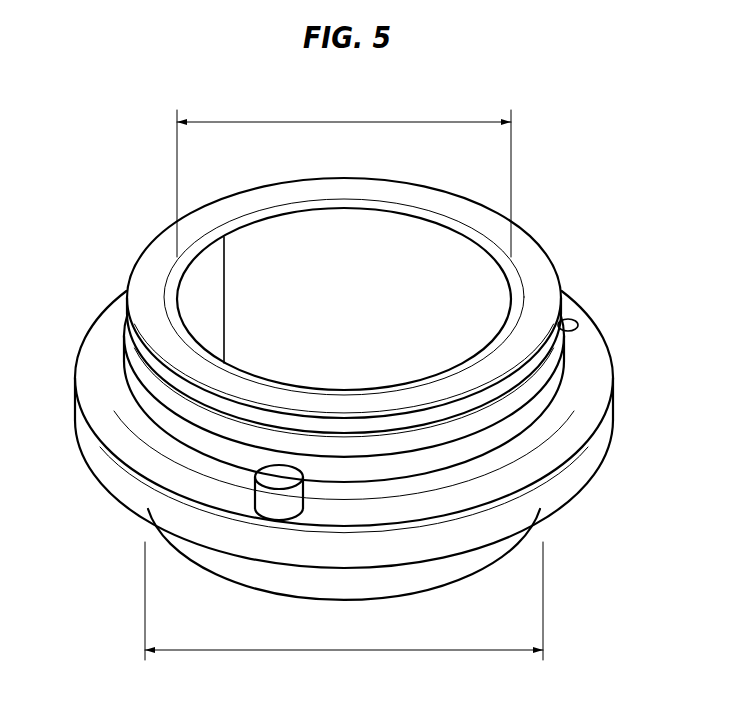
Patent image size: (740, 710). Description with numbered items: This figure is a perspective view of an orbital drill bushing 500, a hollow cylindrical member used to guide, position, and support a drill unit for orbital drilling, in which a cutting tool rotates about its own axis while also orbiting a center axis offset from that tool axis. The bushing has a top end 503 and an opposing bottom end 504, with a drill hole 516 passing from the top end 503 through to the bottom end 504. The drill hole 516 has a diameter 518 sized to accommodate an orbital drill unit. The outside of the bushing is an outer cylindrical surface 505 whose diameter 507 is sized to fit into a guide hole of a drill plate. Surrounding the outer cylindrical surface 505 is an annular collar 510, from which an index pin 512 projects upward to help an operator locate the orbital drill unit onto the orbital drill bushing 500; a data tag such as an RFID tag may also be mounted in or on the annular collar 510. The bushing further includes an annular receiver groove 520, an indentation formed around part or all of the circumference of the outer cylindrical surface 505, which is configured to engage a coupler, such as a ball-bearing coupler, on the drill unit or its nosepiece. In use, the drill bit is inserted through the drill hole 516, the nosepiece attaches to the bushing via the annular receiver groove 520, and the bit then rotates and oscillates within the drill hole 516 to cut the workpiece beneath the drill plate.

The orbital drill bushing 500 is at (624, 124).
The top end 503 is at (533, 268).
The bottom end 504 is at (252, 588).
The outer cylindrical surface 505 is at (412, 578).
The diameter 507 is at (405, 652).
The annular collar 510 is at (106, 468).
The index pin 512 is at (253, 493).
The drill hole 516 is at (206, 297).
The diameter 518 is at (283, 122).
The annular receiver groove 520 is at (517, 402).